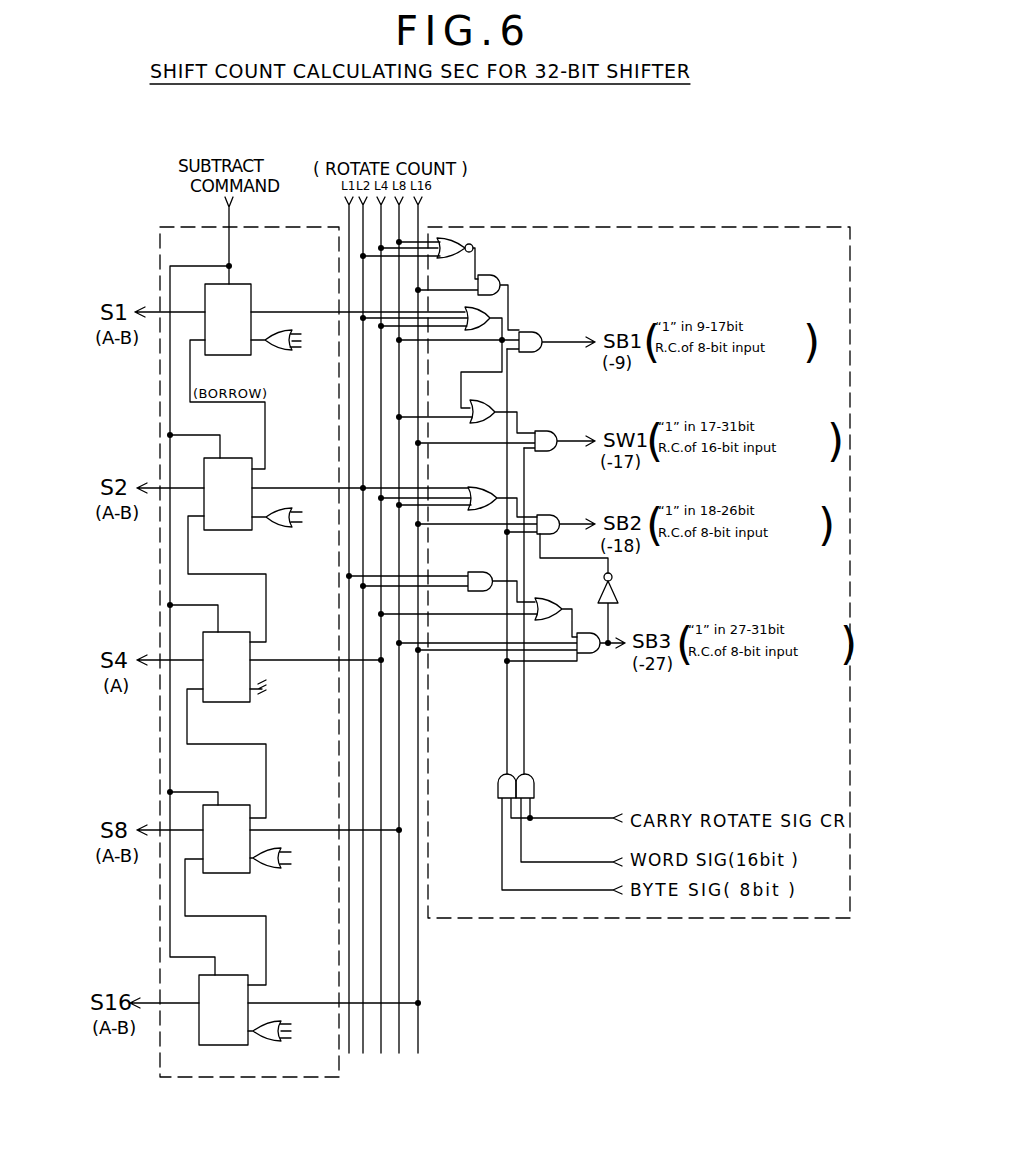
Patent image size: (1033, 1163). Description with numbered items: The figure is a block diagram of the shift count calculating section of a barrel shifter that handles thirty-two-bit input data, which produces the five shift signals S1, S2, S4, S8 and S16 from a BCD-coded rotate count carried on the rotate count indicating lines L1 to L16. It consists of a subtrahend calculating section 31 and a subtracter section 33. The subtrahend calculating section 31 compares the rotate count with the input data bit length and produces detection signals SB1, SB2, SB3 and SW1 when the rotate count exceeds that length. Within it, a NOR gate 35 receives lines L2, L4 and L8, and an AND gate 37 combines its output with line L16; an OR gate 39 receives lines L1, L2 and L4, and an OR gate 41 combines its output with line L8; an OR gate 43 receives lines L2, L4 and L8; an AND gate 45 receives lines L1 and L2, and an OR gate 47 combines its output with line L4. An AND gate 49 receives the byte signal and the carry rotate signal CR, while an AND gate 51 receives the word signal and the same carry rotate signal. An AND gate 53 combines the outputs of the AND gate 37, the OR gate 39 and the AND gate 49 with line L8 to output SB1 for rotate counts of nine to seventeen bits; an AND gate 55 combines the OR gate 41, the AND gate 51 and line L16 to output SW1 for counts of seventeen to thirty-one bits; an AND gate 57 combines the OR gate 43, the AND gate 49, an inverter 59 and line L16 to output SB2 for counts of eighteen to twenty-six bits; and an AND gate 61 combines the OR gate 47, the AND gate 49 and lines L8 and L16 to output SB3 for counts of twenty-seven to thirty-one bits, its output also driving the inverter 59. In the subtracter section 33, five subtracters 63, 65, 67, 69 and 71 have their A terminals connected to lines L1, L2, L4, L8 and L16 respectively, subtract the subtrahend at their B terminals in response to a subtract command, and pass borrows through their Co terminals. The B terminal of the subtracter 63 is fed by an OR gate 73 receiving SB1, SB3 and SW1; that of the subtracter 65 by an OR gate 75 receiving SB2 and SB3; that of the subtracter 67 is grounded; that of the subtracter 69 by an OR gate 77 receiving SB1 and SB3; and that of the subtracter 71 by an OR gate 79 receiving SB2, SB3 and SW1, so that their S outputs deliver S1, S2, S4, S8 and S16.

The subtrahend calculating section 31 is at (525, 227).
The subtracter section 33 is at (283, 227).
The NOR gate 35 is at (472, 244).
The AND gate 37 is at (500, 278).
The OR gate 39 is at (466, 308).
The OR gate 41 is at (471, 406).
The OR gate 43 is at (476, 487).
The AND gate 45 is at (474, 572).
The OR gate 47 is at (547, 599).
The AND gate 49 is at (492, 780).
The AND gate 51 is at (536, 783).
The AND gate 53 is at (538, 332).
The AND gate 55 is at (548, 431).
The AND gate 57 is at (548, 515).
The inverter 59 is at (615, 586).
The AND gate 61 is at (593, 655).
The subtracter 63 is at (251, 284).
The subtracter 65 is at (223, 456).
The subtracter 67 is at (237, 630).
The subtracter 69 is at (225, 802).
The subtracter 71 is at (219, 974).
The OR gate 73 is at (273, 352).
The OR gate 75 is at (282, 529).
The OR gate 77 is at (273, 869).
The OR gate 79 is at (263, 1042).